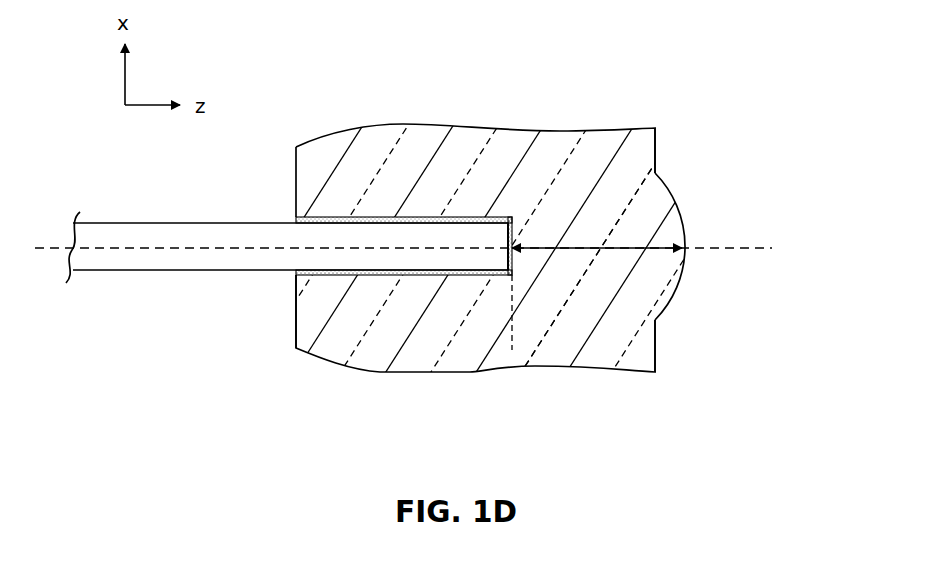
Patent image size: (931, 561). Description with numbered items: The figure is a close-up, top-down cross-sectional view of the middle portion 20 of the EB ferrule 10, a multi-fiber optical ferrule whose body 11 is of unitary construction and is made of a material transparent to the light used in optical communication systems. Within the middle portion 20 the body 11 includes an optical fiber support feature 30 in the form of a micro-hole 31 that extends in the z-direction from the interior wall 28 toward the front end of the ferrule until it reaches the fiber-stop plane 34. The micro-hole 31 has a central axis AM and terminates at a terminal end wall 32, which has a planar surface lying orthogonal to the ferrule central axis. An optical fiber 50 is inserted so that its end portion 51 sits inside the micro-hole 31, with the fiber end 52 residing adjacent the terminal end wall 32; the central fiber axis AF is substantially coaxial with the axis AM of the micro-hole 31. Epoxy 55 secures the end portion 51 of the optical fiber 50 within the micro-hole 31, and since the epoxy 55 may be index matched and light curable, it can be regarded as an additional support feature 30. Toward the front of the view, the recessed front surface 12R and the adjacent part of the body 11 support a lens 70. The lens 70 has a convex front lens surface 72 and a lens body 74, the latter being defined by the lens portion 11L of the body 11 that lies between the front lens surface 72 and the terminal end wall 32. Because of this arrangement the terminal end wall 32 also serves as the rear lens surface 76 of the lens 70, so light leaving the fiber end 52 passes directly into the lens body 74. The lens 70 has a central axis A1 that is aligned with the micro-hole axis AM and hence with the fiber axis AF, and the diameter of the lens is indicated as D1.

The EB ferrule 10 is at (368, 115).
The ferrule body 11 is at (373, 174).
The lens portion 11L is at (581, 173).
The recessed front surface 12R is at (656, 142).
The middle portion 20 is at (310, 380).
The interior wall 28 is at (296, 326).
The optical fiber support feature 30 is at (342, 190).
The micro-hole 31 is at (331, 217).
The terminal end wall 32 is at (507, 238).
The rear lens surface 76 is at (507, 238).
The fiber-stop plane 34 is at (512, 349).
The optical fiber 50 is at (139, 218).
The end portion 51 is at (398, 238).
The end 52 is at (511, 266).
The epoxy 55 is at (360, 276).
The lens 70 is at (691, 222).
The front lens surface 72 is at (672, 216).
The lens body 74 is at (614, 225).
The lens central axis A1 is at (745, 252).
The lens diameter D1 is at (654, 283).
The micro-hole central axis AM is at (243, 252).
The fiber central axis AF is at (243, 252).